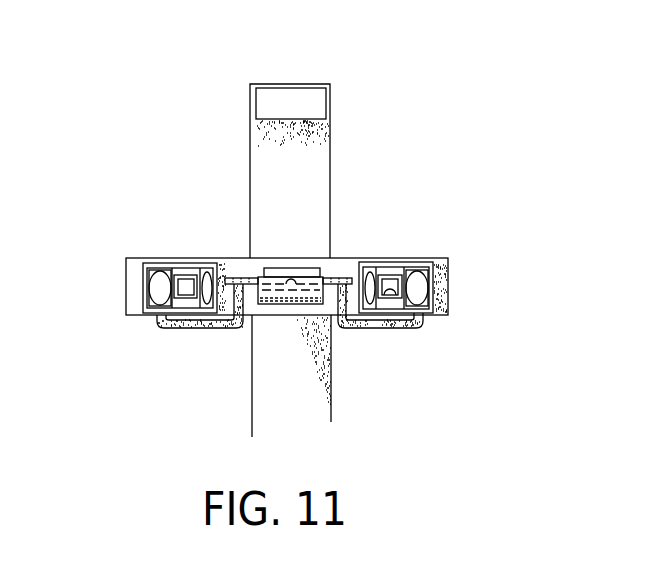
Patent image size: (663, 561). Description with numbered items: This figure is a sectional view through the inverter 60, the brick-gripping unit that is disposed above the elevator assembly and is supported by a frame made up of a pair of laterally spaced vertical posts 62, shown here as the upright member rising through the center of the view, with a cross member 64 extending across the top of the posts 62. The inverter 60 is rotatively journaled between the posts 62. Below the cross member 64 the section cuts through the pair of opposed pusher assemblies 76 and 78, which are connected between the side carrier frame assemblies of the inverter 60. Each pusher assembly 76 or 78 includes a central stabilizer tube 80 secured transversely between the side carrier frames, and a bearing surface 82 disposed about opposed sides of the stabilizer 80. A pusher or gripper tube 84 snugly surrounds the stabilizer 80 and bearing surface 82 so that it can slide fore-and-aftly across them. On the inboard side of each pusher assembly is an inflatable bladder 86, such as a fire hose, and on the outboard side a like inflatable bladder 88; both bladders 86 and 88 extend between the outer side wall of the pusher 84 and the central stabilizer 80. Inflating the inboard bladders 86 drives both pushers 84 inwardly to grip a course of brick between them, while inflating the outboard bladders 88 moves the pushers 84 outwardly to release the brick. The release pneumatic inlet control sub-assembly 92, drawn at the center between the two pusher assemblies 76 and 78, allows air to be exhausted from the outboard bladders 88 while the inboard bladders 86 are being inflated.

The inverter 60 is at (470, 152).
The vertical post 62 is at (320, 146).
The cross member 64 is at (319, 86).
The pusher assembly 76 is at (125, 332).
The pusher assembly 78 is at (435, 328).
The central stabilizer tube 80 is at (188, 298).
The bearing surface 82 is at (193, 270).
The pusher tube 84 is at (160, 270).
The inboard inflatable bladder 86 is at (209, 305).
The outboard inflatable bladder 88 is at (152, 283).
The release pneumatic inlet control sub-assembly 92 is at (293, 306).